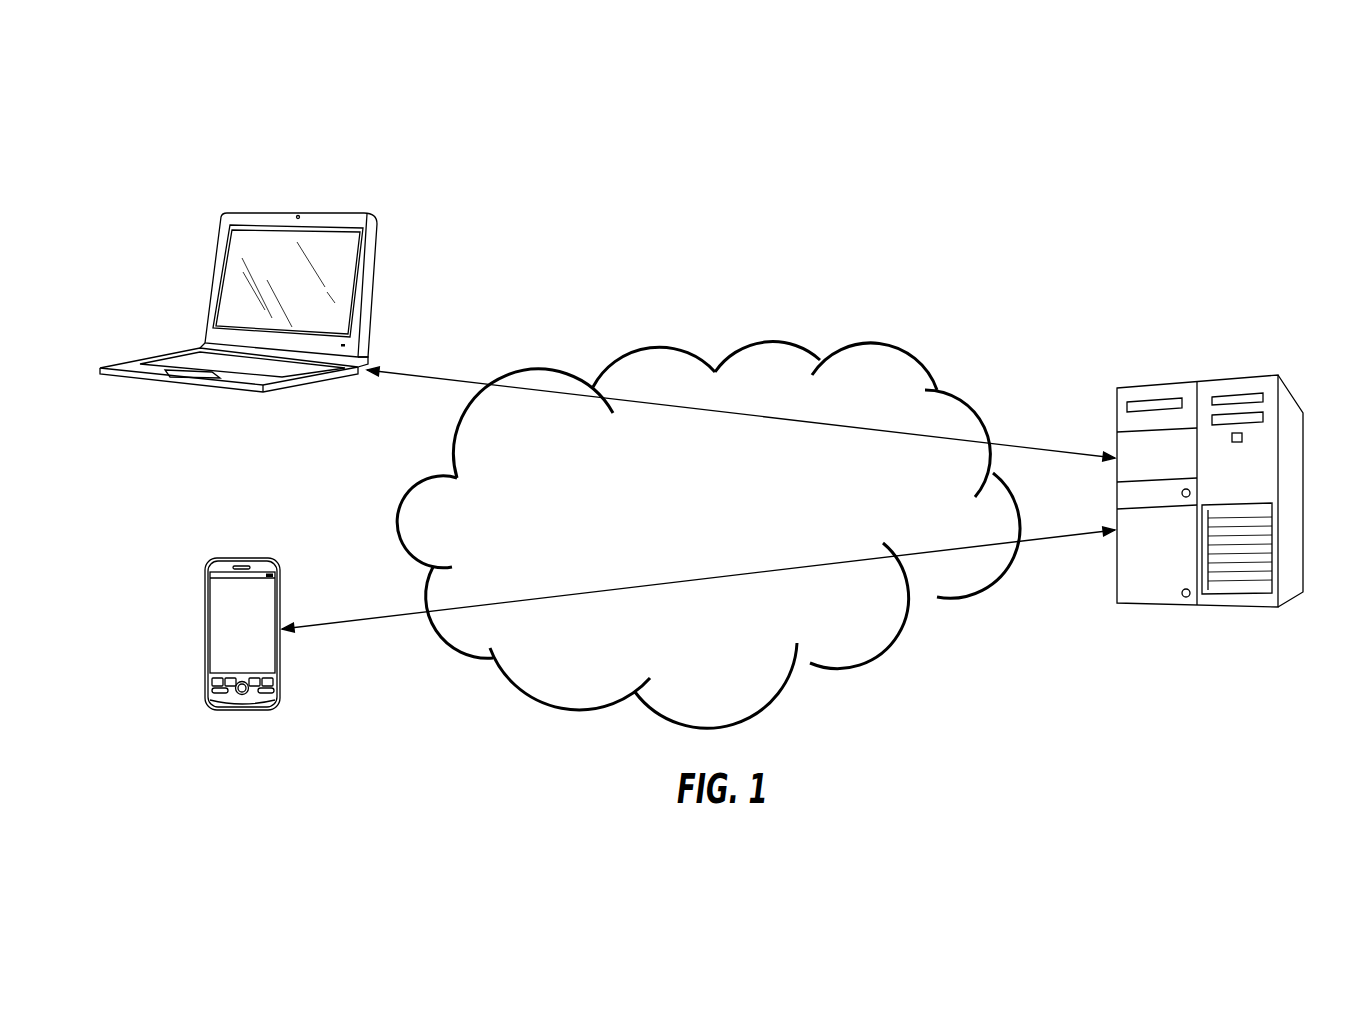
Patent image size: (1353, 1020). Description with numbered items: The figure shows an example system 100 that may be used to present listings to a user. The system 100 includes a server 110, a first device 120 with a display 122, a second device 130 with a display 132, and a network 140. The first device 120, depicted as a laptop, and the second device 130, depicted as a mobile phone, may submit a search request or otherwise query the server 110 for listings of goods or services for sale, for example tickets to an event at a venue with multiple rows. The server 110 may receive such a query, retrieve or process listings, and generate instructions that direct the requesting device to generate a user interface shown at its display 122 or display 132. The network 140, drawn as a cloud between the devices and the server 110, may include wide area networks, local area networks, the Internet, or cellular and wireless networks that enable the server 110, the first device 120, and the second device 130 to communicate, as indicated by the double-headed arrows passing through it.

The system 100 is at (1223, 96).
The server 110 is at (1235, 378).
The first device 120 is at (270, 270).
The display 122 is at (350, 272).
The second device 130 is at (215, 599).
The display 132 is at (215, 613).
The network 140 is at (933, 633).